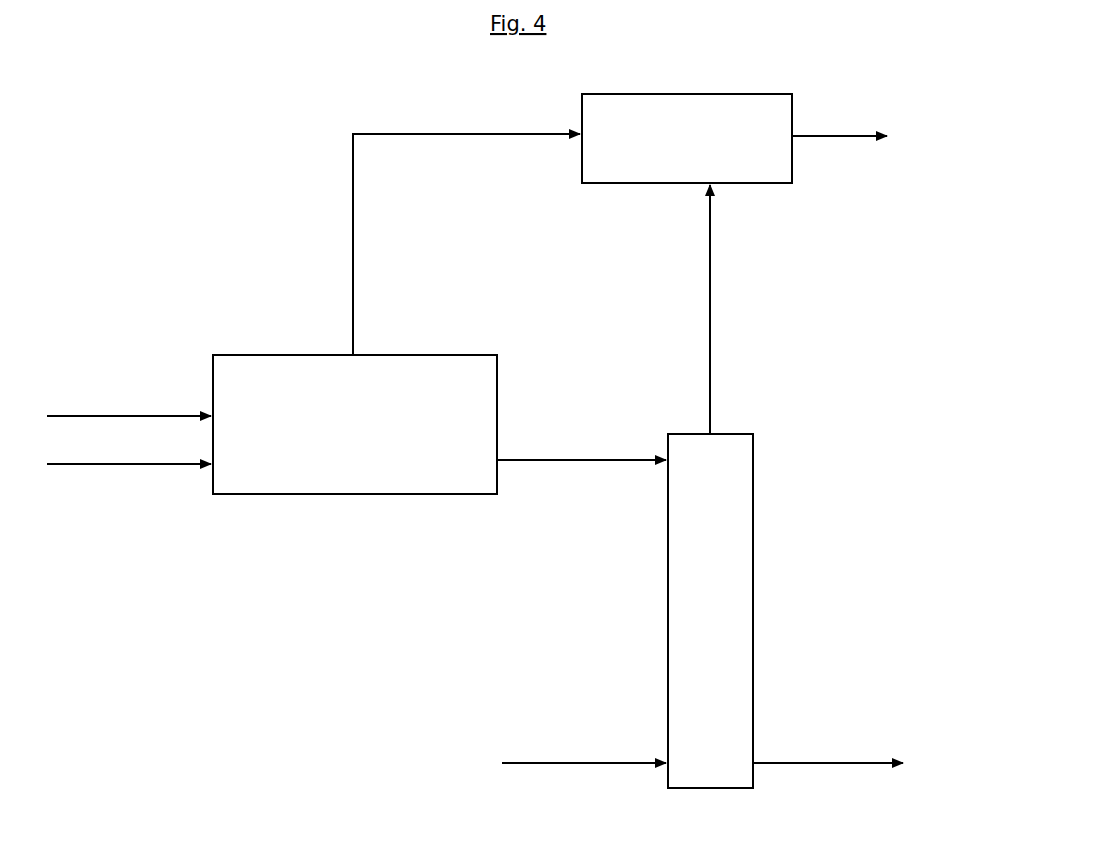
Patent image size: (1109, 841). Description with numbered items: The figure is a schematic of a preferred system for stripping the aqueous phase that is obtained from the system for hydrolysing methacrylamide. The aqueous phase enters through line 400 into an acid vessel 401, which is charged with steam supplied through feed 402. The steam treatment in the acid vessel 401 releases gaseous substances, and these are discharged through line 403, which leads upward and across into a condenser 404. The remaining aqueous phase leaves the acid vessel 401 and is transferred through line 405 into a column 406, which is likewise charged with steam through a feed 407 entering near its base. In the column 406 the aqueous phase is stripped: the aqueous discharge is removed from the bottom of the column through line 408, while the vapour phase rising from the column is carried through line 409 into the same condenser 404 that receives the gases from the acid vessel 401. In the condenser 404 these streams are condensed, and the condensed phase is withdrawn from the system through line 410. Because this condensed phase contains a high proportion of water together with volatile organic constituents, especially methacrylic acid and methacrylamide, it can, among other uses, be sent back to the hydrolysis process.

The line 400 is at (135, 415).
The acid vessel 401 is at (283, 415).
The feed 402 is at (128, 466).
The line 403 is at (353, 230).
The condenser 404 is at (628, 158).
The line 405 is at (582, 462).
The column 406 is at (697, 652).
The feed 407 is at (600, 762).
The line 408 is at (842, 762).
The line 409 is at (710, 360).
The line 410 is at (858, 139).